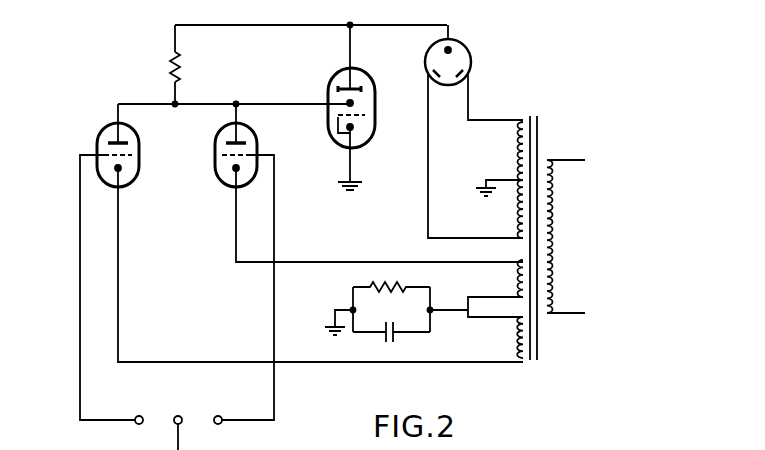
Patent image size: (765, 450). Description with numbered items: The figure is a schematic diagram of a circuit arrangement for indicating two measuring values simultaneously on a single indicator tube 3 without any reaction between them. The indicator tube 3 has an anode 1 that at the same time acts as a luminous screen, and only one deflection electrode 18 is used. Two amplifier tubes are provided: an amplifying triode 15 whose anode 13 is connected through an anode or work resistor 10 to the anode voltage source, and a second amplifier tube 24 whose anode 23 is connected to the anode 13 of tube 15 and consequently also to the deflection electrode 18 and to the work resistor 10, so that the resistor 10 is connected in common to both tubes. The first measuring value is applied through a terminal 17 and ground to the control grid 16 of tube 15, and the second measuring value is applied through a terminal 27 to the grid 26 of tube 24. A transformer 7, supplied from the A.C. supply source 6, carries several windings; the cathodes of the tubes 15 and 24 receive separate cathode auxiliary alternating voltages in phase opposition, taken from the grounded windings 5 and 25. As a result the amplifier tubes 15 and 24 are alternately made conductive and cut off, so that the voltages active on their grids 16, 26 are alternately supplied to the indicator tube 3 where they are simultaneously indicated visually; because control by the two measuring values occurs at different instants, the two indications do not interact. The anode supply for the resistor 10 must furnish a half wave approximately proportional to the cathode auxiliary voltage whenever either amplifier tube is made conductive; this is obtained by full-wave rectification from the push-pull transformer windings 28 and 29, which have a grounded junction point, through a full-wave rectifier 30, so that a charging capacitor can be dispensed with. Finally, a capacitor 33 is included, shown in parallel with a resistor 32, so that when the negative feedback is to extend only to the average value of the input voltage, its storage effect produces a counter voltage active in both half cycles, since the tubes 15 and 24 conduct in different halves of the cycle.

The anode 1 is at (362, 88).
The indicator tube 3 is at (354, 108).
The winding 5 is at (508, 278).
The A.C. supply source 6 is at (566, 236).
The transformer 7 is at (511, 171).
The anode resistor 10 is at (183, 67).
The anode 13 is at (222, 143).
The amplifying triode 15 is at (235, 153).
The control grid 16 is at (224, 156).
The terminal 17 is at (217, 430).
The deflection electrode 18 is at (370, 107).
The anode 23 is at (132, 143).
The second amplifier tube 24 is at (113, 155).
The winding 25 is at (503, 337).
The grid 26 is at (130, 156).
The terminal 27 is at (133, 430).
The push-pull transformer winding 28 is at (503, 151).
The push-pull transformer winding 29 is at (503, 209).
The full-wave rectifier 30 is at (457, 55).
The resistor 32 is at (391, 278).
The capacitor 33 is at (391, 338).